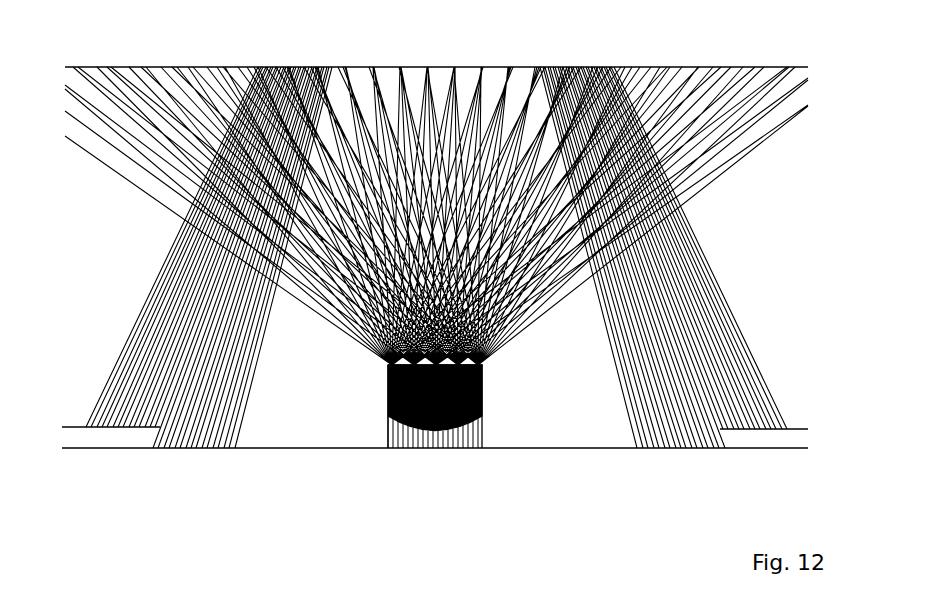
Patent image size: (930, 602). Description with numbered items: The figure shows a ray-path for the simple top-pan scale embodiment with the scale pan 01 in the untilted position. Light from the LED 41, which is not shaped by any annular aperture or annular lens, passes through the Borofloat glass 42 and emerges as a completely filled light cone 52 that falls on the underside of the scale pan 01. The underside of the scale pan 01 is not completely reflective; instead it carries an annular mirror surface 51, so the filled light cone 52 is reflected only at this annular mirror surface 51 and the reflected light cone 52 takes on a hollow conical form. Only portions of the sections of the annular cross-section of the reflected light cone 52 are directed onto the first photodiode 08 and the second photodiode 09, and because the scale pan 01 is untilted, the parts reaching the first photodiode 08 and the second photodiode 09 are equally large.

The scale pan 01 is at (733, 67).
The first photodiode 08 is at (85, 427).
The second photodiode 09 is at (789, 429).
The LED 41 is at (430, 432).
The Borofloat glass 42 is at (480, 407).
The annular mirror surface 51 is at (600, 67).
The light cone 52 is at (365, 345).